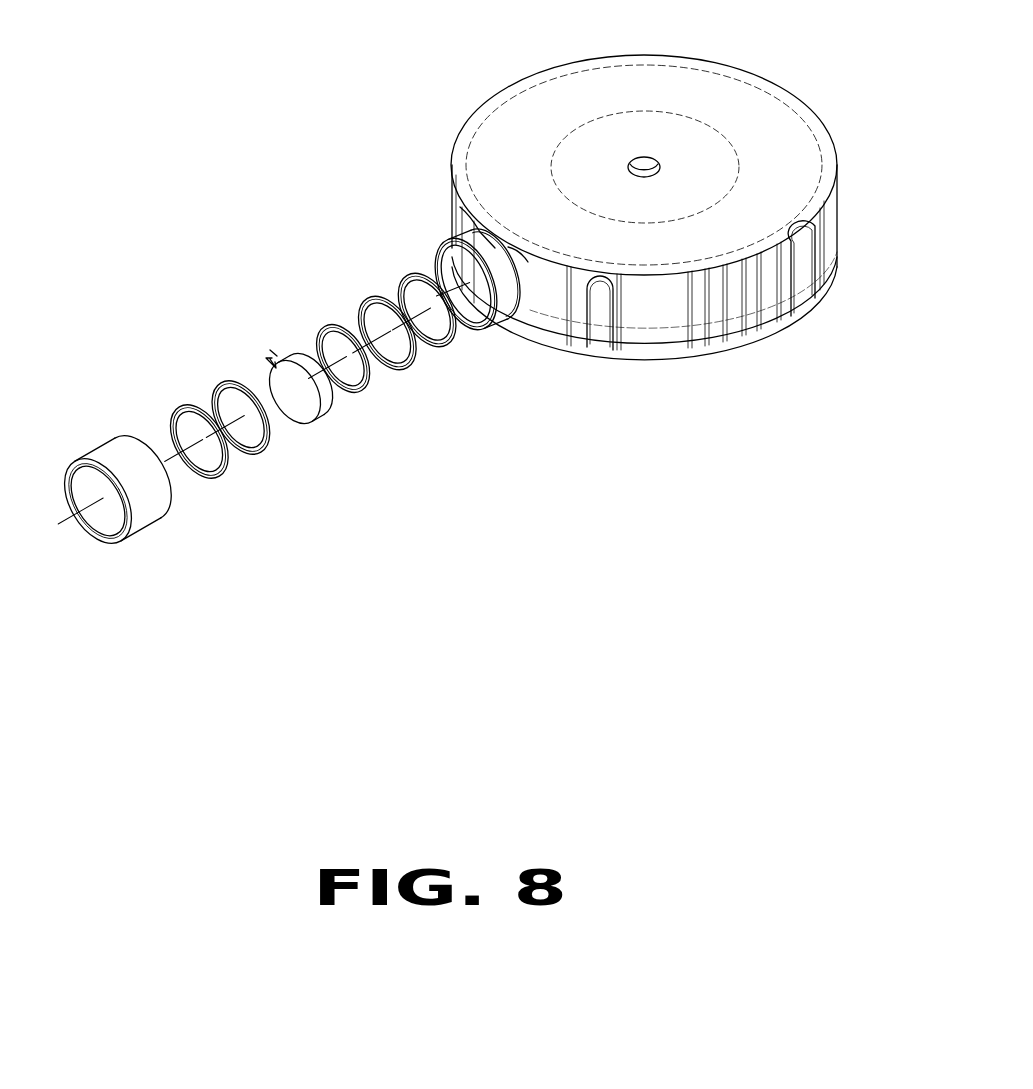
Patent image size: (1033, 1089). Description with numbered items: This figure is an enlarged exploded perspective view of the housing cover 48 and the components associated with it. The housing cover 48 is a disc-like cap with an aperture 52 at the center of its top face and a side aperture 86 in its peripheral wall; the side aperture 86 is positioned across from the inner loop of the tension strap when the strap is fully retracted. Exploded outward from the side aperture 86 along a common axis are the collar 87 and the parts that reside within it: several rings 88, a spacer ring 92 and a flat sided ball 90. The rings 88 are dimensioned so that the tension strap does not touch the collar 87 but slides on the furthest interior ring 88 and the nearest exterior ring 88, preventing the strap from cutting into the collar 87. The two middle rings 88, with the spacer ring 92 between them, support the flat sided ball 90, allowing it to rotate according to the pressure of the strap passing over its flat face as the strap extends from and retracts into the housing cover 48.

The housing cover 48 is at (728, 100).
The aperture in housing cover 52 is at (634, 161).
The side aperture in housing cover 86 is at (450, 252).
The collar 87 is at (112, 445).
The ring in collar 88 is at (223, 387).
The flat sided ball in collar 90 is at (305, 405).
The spacer ring in collar 92 is at (332, 327).